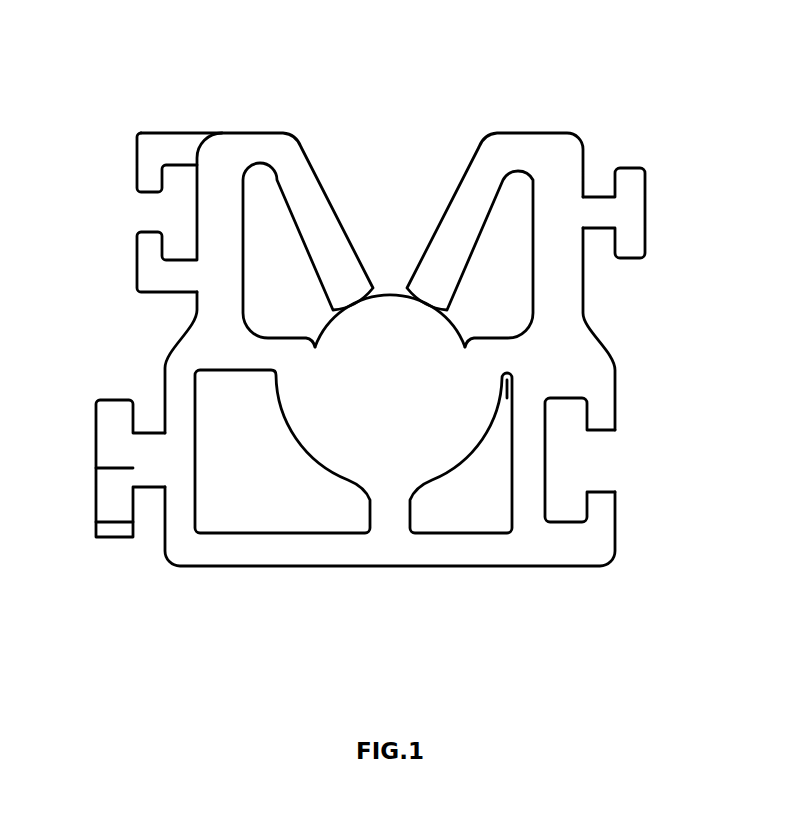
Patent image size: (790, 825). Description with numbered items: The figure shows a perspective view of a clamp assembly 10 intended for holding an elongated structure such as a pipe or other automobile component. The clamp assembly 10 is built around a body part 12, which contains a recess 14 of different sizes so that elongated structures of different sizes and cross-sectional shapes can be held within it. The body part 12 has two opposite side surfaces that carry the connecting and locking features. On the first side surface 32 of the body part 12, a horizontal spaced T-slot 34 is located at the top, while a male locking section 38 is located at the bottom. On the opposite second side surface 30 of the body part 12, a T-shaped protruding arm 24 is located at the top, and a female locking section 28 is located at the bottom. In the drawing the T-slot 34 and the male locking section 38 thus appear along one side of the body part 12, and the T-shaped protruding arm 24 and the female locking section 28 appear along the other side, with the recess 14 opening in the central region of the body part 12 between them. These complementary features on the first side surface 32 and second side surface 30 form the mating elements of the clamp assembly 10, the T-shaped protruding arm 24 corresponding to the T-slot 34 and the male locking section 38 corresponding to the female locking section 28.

The clamp assembly 10 is at (459, 89).
The body part 12 is at (223, 130).
The recess 14 is at (375, 432).
The T-shaped protruding arm 24 is at (640, 202).
The female locking section 28 is at (613, 462).
The second side surface 30 is at (597, 333).
The first side surface 32 is at (168, 357).
The horizontal spaced T-slot 34 is at (140, 132).
The male locking section 38 is at (97, 443).